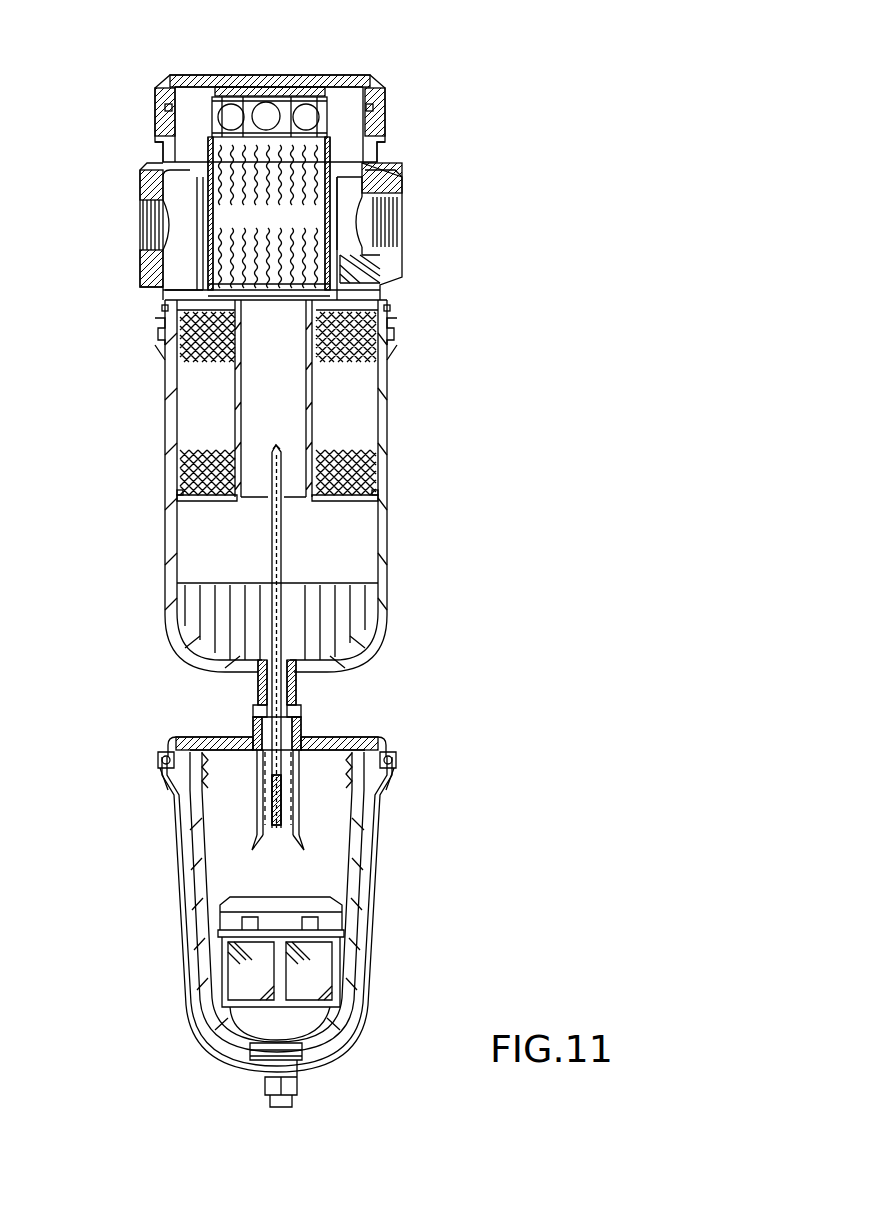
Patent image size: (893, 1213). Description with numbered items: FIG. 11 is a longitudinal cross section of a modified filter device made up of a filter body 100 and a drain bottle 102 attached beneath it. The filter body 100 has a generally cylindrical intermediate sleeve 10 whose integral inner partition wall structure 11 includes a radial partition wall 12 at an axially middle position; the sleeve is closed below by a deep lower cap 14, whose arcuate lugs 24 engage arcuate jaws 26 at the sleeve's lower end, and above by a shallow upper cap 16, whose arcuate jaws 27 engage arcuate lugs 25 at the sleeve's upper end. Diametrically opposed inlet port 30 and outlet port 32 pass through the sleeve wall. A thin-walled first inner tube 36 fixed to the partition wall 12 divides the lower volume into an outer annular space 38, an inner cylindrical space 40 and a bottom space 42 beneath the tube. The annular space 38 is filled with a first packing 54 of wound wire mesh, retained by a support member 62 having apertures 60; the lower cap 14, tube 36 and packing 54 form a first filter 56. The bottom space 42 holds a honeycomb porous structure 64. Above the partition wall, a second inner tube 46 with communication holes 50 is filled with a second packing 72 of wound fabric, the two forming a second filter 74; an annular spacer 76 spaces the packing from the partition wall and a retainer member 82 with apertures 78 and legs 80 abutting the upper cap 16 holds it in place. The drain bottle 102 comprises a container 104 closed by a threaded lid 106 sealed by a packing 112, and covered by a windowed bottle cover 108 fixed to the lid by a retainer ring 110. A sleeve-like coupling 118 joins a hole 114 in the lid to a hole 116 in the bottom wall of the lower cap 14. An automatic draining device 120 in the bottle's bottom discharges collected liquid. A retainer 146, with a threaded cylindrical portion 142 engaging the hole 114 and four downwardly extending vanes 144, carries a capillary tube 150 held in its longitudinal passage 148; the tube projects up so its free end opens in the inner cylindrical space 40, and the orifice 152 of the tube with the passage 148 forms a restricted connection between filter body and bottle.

The intermediate sleeve 10 is at (140, 292).
The inner partition wall structure 11 is at (194, 249).
The radial partition wall 12 is at (200, 295).
The lower cap 14 is at (163, 554).
The upper cap 16 is at (396, 66).
The arcuate lugs 24 is at (160, 343).
The arcuate lugs 25 is at (168, 132).
The arcuate jaws 26 is at (148, 359).
The arcuate jaws 27 is at (163, 150).
The inlet port 30 is at (141, 218).
The outlet port 32 is at (378, 200).
The first inner tube 36 is at (313, 410).
The outer annular space 38 is at (185, 425).
The inner cylindrical space 40 is at (256, 338).
The bottom space 42 is at (300, 564).
The second inner tube 46 is at (327, 178).
The communication holes 50 is at (212, 107).
The first packing 54 is at (366, 449).
The first filter 56 is at (164, 456).
The apertures 60 is at (178, 497).
The support member 62 is at (378, 490).
The porous structure 64 is at (349, 578).
The second packing 72 is at (322, 234).
The second filter 74 is at (332, 216).
The annular spacer 76 is at (320, 292).
The apertures 78 is at (243, 100).
The legs 80 is at (273, 104).
The retainer member 82 is at (290, 123).
The filter body 100 is at (424, 369).
The drain bottle 102 is at (424, 900).
The container 104 is at (360, 938).
The lid 106 is at (335, 740).
The bottle cover 108 is at (178, 849).
The retainer ring 110 is at (170, 750).
The packing 112 is at (384, 740).
The hole 114 is at (256, 706).
The hole 116 is at (296, 681).
The coupling 118 is at (258, 681).
The automatic draining device 120 is at (296, 892).
The cylindrical portion 142 is at (301, 742).
The vanes 144 is at (263, 817).
The retainer 146 is at (309, 783).
The longitudinal passage 148 is at (277, 797).
The capillary tube 150 is at (270, 556).
The orifice 152 is at (283, 515).